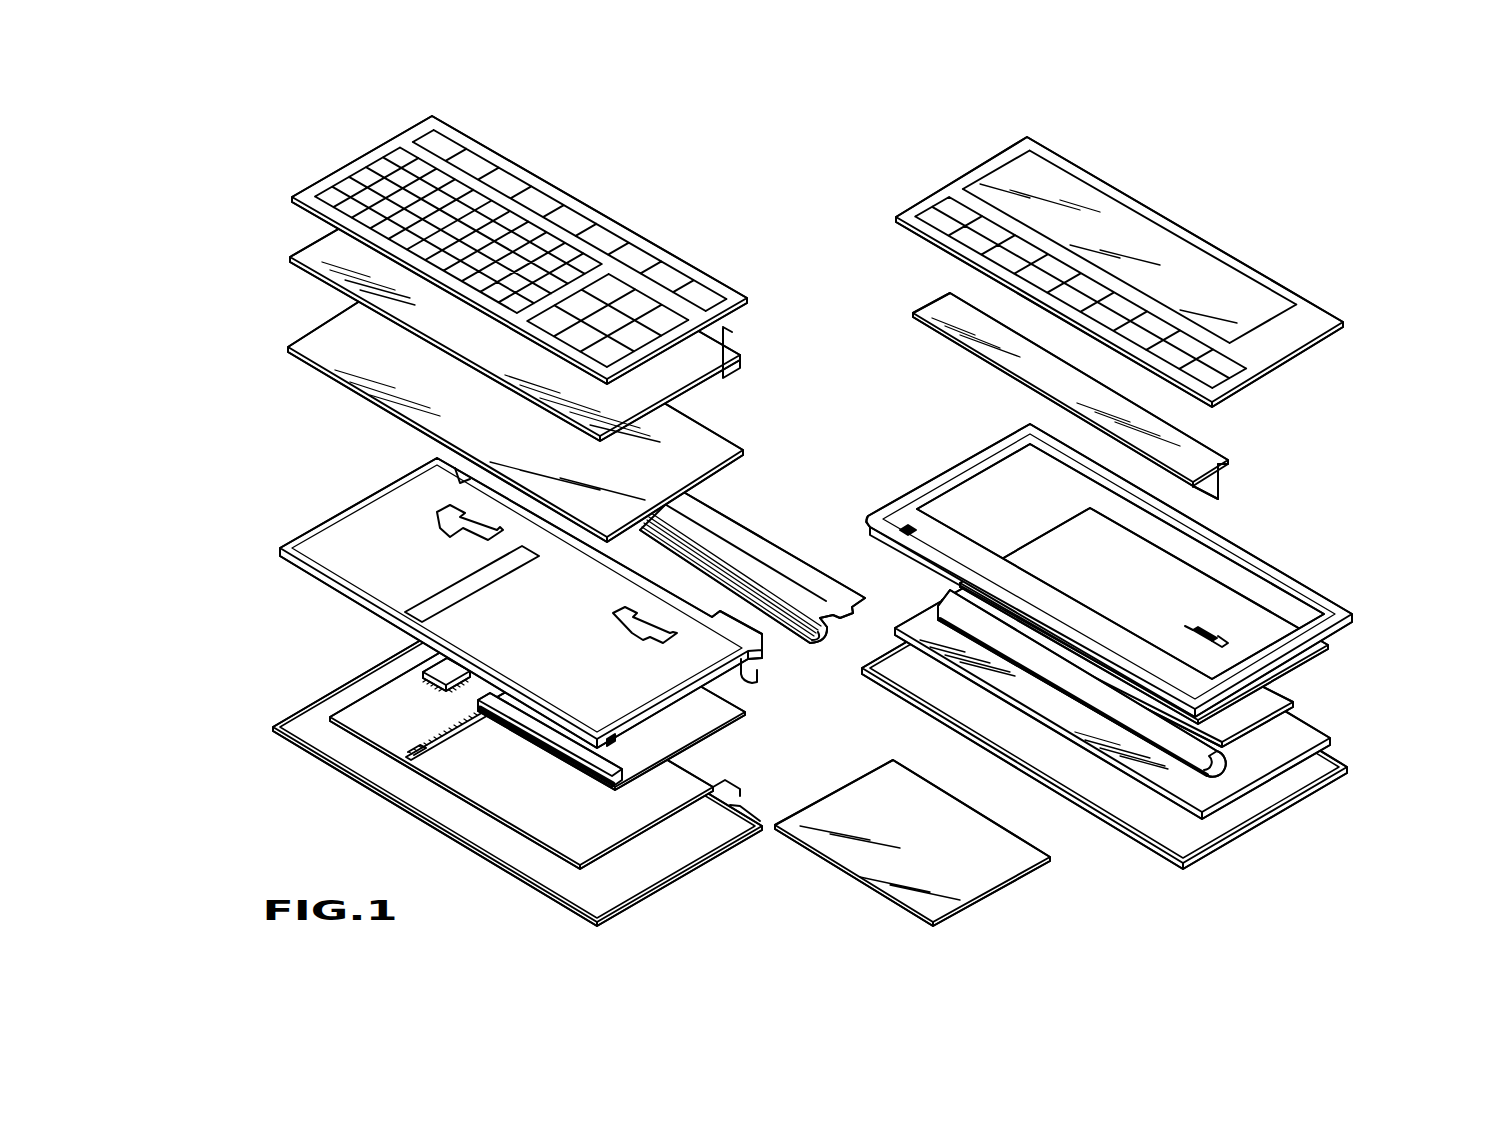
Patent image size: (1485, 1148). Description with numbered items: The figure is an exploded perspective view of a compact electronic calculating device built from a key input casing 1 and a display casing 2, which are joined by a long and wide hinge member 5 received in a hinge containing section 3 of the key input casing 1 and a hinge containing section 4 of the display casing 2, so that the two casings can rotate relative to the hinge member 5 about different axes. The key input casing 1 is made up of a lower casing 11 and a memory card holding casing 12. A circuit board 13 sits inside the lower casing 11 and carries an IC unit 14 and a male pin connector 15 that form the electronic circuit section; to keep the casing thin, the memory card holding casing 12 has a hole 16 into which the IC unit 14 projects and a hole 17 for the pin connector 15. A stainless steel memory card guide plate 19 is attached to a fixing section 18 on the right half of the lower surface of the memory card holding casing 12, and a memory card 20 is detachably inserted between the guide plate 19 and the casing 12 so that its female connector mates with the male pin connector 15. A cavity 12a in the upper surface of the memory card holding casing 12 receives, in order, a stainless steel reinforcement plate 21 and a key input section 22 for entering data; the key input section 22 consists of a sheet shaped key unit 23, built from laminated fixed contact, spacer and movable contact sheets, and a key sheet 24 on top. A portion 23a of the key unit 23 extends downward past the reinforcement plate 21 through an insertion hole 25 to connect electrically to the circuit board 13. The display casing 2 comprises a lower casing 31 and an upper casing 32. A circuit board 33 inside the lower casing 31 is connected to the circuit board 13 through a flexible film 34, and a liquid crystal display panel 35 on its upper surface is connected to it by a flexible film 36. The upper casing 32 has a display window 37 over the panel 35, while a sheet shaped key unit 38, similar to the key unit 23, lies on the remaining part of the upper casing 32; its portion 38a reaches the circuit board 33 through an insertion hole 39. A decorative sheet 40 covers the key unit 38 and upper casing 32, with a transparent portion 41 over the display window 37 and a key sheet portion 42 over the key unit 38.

The key input casing 1 is at (240, 590).
The display casing 2 is at (1378, 652).
The hinge containing section 3 is at (668, 614).
The hinge containing section 4 is at (938, 540).
The hinge member 5 is at (750, 534).
The lower casing 11 is at (286, 720).
The memory card holding casing 12 is at (312, 573).
The cavity 12a is at (353, 537).
The circuit board 13 is at (538, 823).
The IC unit 14 is at (443, 674).
The male pin connector 15 is at (418, 762).
The hole 16 is at (446, 527).
The hole 17 is at (476, 588).
The fixing section 18 is at (611, 746).
The memory card guide plate 19 is at (560, 738).
The memory card 20 is at (975, 893).
The reinforcement plate 21 is at (335, 342).
The key input section 22 is at (247, 150).
The sheet shaped key unit 23 is at (330, 250).
The portion of key unit 23a is at (725, 380).
The key sheet 24 is at (313, 185).
The insertion hole 25 is at (641, 636).
The lower casing 31 is at (1333, 753).
The upper casing 32 is at (1338, 637).
The circuit board 33 is at (1257, 762).
The flexible film 34 is at (728, 738).
The liquid crystal display panel 35 is at (1268, 712).
The flexible film 36 is at (1173, 742).
The display window 37 is at (1225, 580).
The sheet shaped key unit 38 is at (1180, 443).
The portion of sheet shaped key unit 38a is at (1223, 482).
The insertion hole 39 is at (1270, 590).
The decorative sheet 40 is at (1293, 307).
The transparent portion 41 is at (1187, 253).
The key sheet portion 42 is at (933, 215).